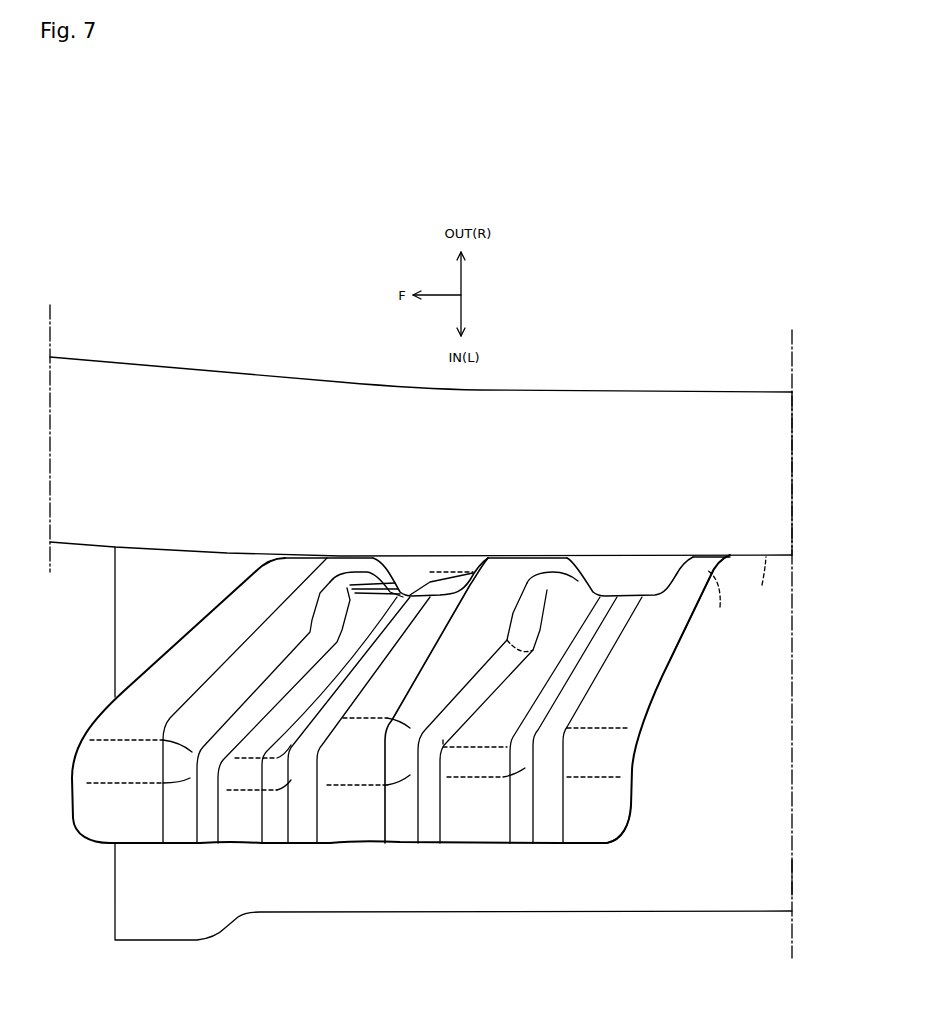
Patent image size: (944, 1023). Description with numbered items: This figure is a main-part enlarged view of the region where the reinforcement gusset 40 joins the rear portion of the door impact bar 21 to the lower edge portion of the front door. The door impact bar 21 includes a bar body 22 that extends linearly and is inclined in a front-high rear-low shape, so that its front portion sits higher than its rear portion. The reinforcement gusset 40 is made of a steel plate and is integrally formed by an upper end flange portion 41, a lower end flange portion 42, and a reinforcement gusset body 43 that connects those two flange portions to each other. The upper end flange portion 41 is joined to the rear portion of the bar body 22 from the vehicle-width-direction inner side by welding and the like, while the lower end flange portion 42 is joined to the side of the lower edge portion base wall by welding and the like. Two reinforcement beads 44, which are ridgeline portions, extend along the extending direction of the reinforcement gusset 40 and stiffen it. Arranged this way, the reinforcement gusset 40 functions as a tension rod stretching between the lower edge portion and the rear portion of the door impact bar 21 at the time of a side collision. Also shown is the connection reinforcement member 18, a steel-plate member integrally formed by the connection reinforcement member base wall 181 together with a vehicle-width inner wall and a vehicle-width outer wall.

The connection reinforcement member 18 is at (745, 916).
The connection reinforcement member base wall 181 is at (773, 871).
The door impact bar 21 is at (781, 560).
The bar body 22 is at (755, 582).
The reinforcement gusset 40 is at (640, 756).
The upper end flange portion 41 is at (717, 599).
The lower end flange portion 42 is at (620, 836).
The reinforcement gusset body 43 is at (670, 662).
The reinforcement beads 44 is at (452, 597).